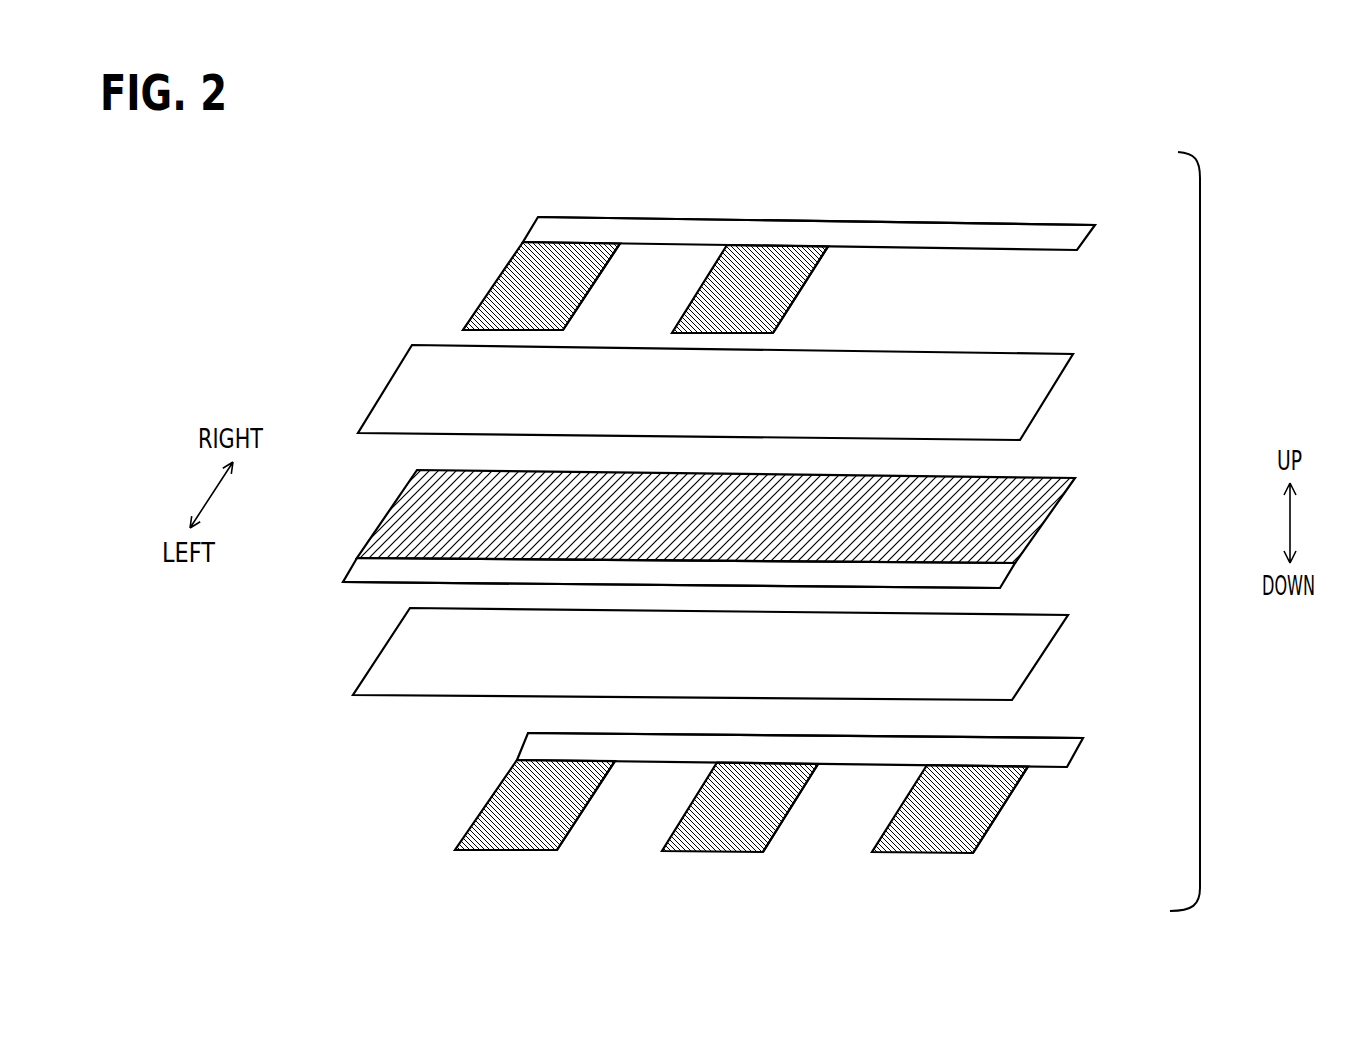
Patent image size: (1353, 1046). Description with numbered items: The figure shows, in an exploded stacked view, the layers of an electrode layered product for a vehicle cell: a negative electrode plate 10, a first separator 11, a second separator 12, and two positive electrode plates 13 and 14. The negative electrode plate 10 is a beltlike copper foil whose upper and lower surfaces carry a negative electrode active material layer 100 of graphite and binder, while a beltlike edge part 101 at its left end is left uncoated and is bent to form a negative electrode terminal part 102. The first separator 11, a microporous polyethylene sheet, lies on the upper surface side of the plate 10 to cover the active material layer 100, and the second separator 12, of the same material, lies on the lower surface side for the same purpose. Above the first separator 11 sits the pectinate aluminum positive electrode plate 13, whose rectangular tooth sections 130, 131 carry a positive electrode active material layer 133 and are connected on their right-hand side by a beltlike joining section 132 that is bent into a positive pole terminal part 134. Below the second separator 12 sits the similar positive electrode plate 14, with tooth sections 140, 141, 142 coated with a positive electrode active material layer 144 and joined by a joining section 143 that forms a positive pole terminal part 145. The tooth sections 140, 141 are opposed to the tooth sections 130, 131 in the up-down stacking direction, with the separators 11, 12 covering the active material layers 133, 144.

The negative electrode plate 10 is at (716, 541).
The negative electrode active material layer 100 is at (1003, 480).
The edge part 101 is at (988, 575).
The negative electrode terminal part 102 is at (395, 570).
The first separator 11 is at (1032, 392).
The second separator 12 is at (1030, 653).
The positive electrode plate 13 is at (688, 217).
The tooth section 130 is at (498, 282).
The tooth section 131 is at (697, 295).
The joining section 132 is at (878, 225).
The positive electrode active material layer 133 is at (583, 290).
The positive pole terminal part 134 is at (1000, 232).
The positive electrode plate 14 is at (707, 853).
The tooth section 140 is at (485, 798).
The tooth section 141 is at (688, 812).
The tooth section 142 is at (895, 810).
The joining section 143 is at (950, 745).
The positive electrode active material layer 144 is at (572, 813).
The positive pole terminal part 145 is at (1050, 755).